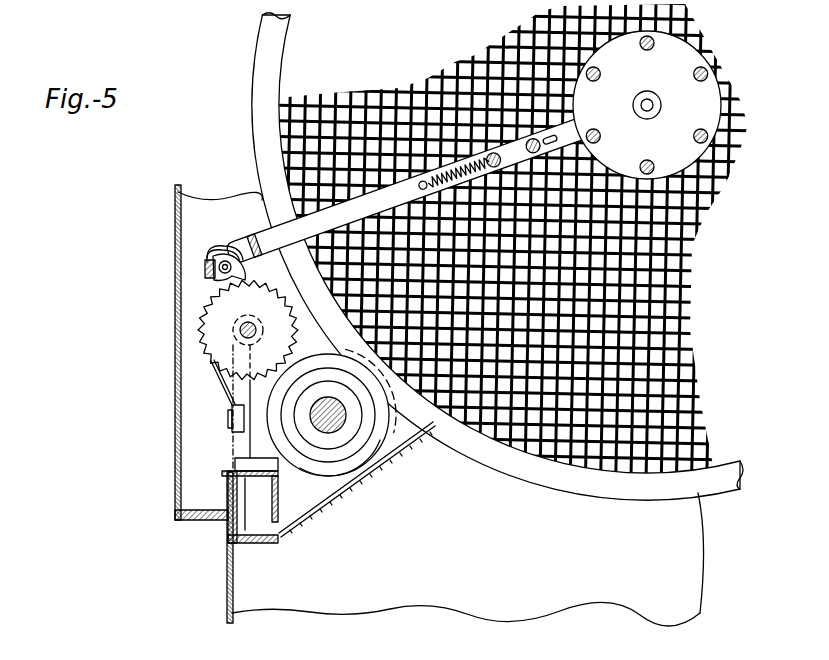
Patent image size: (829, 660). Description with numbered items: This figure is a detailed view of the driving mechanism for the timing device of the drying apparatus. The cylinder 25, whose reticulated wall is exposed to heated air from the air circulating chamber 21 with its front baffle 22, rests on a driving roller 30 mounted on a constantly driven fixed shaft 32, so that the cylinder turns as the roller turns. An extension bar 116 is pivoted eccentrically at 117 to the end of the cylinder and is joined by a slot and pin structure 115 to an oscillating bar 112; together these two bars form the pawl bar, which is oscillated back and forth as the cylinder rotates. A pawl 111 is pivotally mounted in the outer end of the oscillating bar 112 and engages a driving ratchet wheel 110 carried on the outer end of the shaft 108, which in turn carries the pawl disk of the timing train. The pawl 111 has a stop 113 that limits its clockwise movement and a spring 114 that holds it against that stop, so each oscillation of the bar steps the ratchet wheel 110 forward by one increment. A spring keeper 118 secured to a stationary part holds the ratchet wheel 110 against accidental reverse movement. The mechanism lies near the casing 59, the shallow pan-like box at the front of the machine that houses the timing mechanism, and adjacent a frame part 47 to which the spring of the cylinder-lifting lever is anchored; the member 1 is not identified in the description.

The frame member 1 is at (227, 588).
The air circulating chamber 21 is at (468, 559).
The front baffle 22 is at (339, 497).
The cylinder 25 is at (575, 437).
The driving roller 30 is at (345, 436).
The fixed shaft 32 is at (343, 420).
The frame part 47 is at (262, 548).
The casing 59 is at (175, 450).
The shaft 108 is at (238, 336).
The driving ratchet wheel 110 is at (213, 329).
The pawl 111 is at (388, 157).
The oscillating bar 112 is at (252, 192).
The stop 113 is at (206, 270).
The spring 114 is at (212, 262).
The slot and pin structure 115 is at (488, 156).
The extension bar 116 is at (647, 105).
The eccentric pivot 117 is at (657, 104).
The spring keeper 118 is at (222, 385).